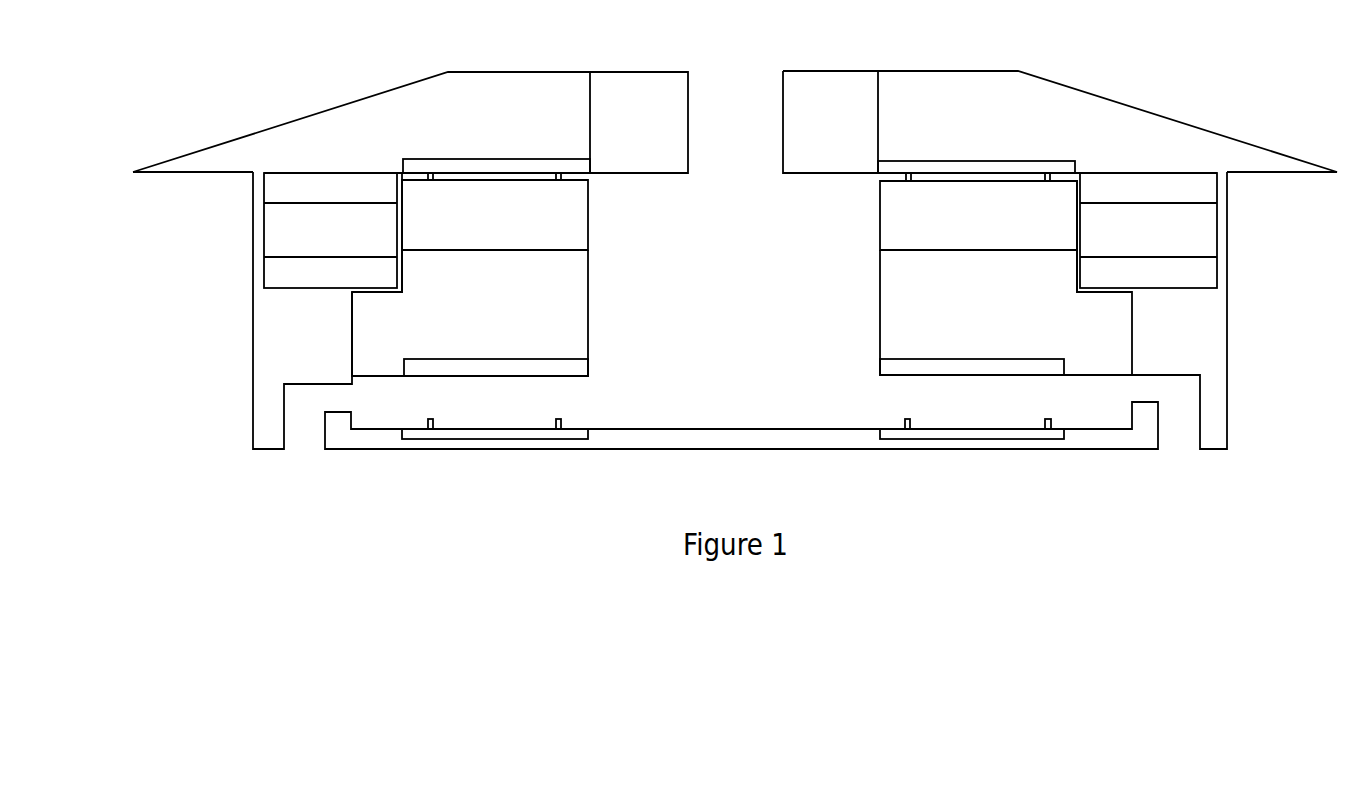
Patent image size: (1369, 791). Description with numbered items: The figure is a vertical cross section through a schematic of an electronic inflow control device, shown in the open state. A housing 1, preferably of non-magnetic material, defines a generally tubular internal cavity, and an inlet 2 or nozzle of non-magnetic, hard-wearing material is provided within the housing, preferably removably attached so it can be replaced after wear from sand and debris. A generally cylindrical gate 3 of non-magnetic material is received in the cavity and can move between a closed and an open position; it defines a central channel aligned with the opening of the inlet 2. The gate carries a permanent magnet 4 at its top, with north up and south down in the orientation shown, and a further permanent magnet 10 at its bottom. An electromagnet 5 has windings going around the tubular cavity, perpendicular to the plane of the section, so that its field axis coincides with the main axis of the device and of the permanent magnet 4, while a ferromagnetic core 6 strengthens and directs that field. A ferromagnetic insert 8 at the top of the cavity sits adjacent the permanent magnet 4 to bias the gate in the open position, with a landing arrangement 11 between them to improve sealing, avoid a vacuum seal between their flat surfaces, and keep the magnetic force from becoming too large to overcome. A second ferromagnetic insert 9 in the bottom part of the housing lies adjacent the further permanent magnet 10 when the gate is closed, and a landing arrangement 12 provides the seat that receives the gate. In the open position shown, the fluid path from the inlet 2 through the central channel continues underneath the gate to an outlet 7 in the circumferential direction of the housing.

The housing 1 is at (1060, 122).
The inlet 2 is at (438, 122).
The gate 3 is at (742, 313).
The permanent magnet 4 is at (739, 215).
The electromagnet 5 is at (740, 232).
The ferromagnetic core 6 is at (1200, 188).
The outlet 7 is at (740, 339).
The ferromagnetic insert 8 is at (987, 165).
The second ferromagnetic insert 9 is at (951, 440).
The further permanent magnet 10 is at (878, 368).
The landing arrangement 11 is at (905, 177).
The landing arrangement 12 is at (903, 425).